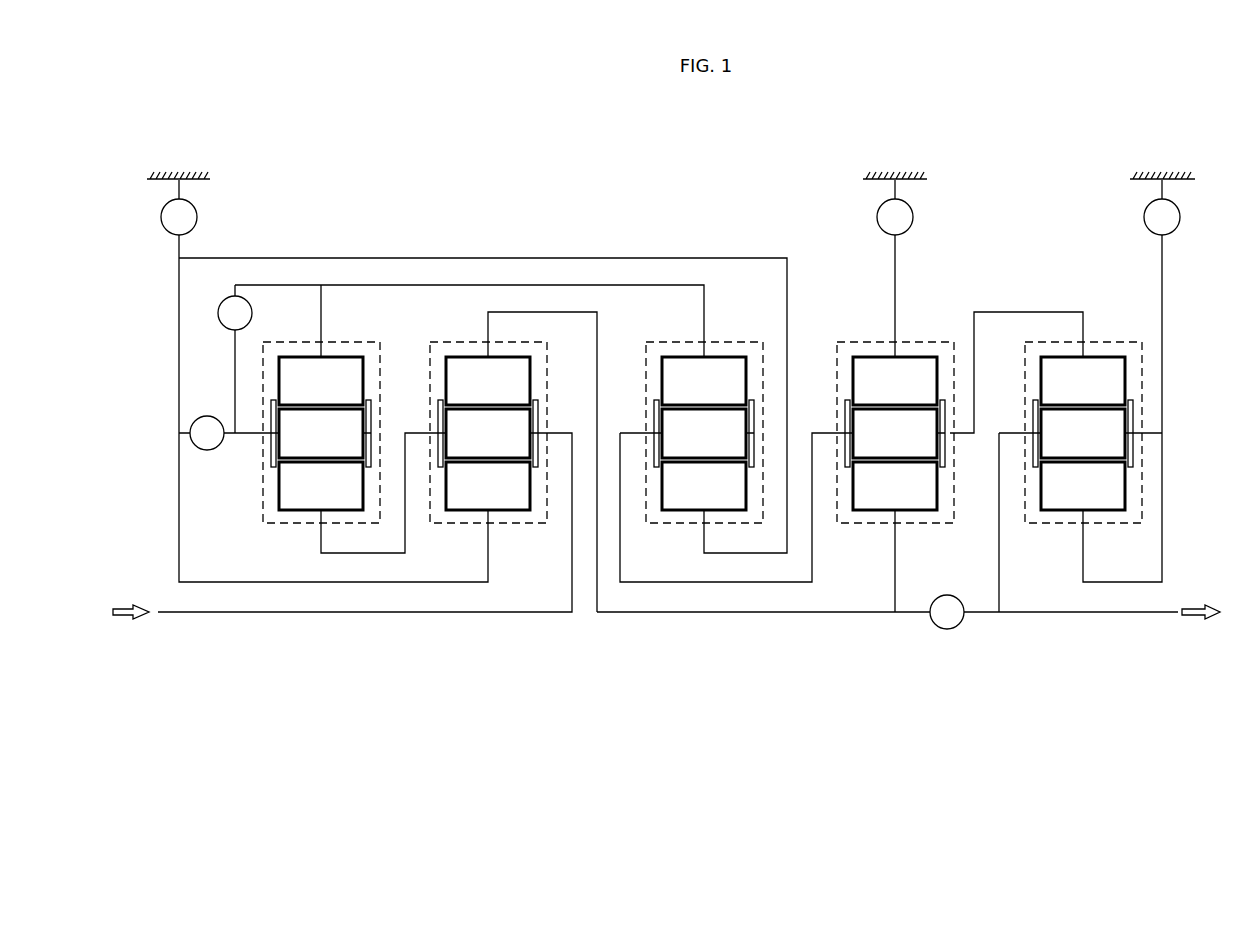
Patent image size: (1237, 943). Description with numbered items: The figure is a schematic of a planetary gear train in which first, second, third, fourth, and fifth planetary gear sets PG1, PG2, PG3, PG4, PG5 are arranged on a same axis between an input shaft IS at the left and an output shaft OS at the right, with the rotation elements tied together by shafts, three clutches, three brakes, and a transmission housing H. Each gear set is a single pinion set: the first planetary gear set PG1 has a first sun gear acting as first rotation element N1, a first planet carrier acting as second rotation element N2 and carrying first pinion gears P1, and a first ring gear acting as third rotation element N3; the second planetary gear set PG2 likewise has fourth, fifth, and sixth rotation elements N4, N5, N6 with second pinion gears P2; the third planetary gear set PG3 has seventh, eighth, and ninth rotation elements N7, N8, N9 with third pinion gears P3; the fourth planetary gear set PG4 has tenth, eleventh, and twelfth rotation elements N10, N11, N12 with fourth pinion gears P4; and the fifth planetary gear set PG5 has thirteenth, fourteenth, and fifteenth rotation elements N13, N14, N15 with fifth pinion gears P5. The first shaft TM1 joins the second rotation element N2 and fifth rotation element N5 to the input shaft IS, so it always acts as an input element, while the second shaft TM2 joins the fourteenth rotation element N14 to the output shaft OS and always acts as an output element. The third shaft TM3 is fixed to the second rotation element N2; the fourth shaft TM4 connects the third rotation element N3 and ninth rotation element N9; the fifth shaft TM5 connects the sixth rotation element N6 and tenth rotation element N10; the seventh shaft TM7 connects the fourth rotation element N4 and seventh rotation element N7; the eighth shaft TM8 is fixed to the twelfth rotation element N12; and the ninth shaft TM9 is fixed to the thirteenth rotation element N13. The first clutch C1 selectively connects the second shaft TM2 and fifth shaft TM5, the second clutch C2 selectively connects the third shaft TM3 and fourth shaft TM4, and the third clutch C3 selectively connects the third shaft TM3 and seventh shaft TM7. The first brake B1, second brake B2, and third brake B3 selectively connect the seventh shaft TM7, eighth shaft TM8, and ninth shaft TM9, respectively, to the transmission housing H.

The transmission housing H is at (179, 176).
The first brake B1 is at (324, 381).
The second brake B2 is at (895, 207).
The third brake B3 is at (1162, 207).
The first clutch C1 is at (947, 612).
The second clutch C2 is at (235, 313).
The third clutch C3 is at (225, 433).
The input shaft IS is at (173, 615).
The output shaft OS is at (1147, 615).
The first shaft TM1 is at (363, 555).
The second shaft TM2 is at (1000, 590).
The third shaft TM3 is at (235, 372).
The fourth shaft TM4 is at (418, 285).
The fifth shaft TM5 is at (760, 614).
The seventh shaft TM7 is at (531, 258).
The eighth shaft TM8 is at (895, 275).
The ninth shaft TM9 is at (1162, 275).
The first planetary gear set PG1 is at (292, 534).
The second planetary gear set PG2 is at (464, 534).
The third planetary gear set PG3 is at (679, 534).
The fourth planetary gear set PG4 is at (871, 534).
The fifth planetary gear set PG5 is at (1059, 534).
The first rotation element N1 is at (321, 486).
The second rotation element N2 is at (270, 458).
The third rotation element N3 is at (321, 381).
The fourth rotation element N4 is at (488, 486).
The fifth rotation element N5 is at (459, 406).
The sixth rotation element N6 is at (488, 381).
The seventh rotation element N7 is at (704, 486).
The eighth rotation element N8 is at (675, 406).
The ninth rotation element N9 is at (704, 381).
The tenth rotation element N10 is at (895, 486).
The eleventh rotation element N11 is at (866, 406).
The twelfth rotation element N12 is at (895, 381).
The thirteenth rotation element N13 is at (1083, 486).
The fourteenth rotation element N14 is at (1054, 406).
The fifteenth rotation element N15 is at (1083, 381).
The first pinion gears P1 is at (321, 433).
The second pinion gears P2 is at (488, 433).
The third pinion gears P3 is at (704, 433).
The fourth pinion gears P4 is at (895, 433).
The fifth pinion gears P5 is at (1083, 433).